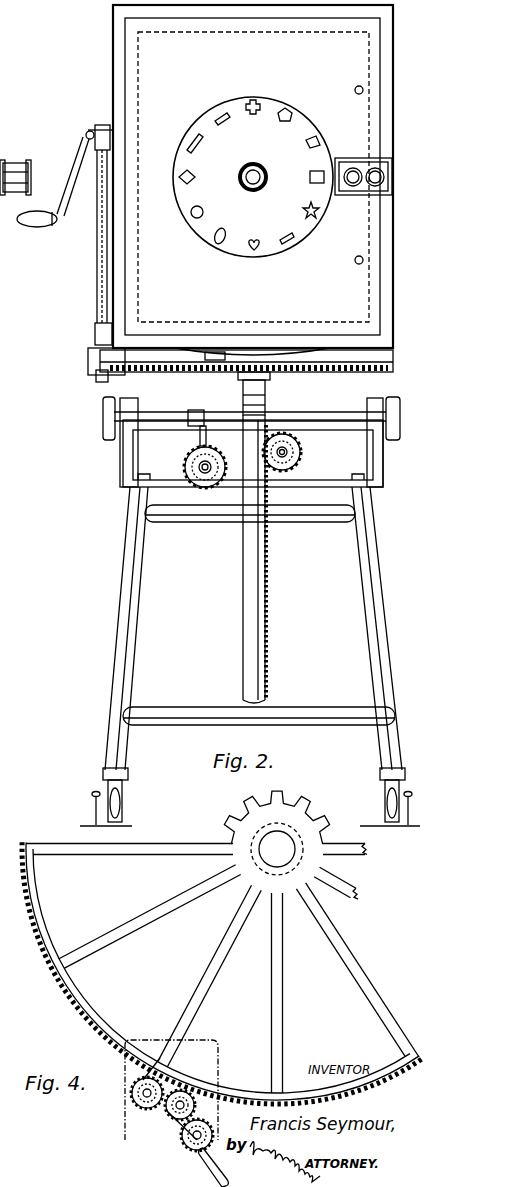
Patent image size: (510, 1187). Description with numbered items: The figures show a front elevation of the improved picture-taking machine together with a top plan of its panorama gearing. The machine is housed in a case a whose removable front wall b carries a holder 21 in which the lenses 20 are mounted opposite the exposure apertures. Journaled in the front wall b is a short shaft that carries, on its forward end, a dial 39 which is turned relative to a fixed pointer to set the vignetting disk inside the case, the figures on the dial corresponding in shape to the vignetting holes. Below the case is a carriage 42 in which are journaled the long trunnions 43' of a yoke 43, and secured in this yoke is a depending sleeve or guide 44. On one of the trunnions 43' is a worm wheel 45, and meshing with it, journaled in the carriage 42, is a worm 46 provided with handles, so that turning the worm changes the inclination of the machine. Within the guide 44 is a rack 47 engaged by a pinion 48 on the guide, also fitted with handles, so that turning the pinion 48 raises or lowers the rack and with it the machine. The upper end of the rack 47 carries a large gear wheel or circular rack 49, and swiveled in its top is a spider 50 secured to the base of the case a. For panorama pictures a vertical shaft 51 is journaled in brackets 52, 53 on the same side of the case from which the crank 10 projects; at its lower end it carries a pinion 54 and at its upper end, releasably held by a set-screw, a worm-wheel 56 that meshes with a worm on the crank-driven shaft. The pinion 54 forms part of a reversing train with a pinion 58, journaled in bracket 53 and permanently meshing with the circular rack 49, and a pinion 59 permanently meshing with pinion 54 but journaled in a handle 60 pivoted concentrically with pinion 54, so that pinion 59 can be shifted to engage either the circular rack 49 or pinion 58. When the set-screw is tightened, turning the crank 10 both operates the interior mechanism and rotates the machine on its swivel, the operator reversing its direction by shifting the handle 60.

In FIG. 2, the crank 10 is at (70, 198).
In FIG. 2, the lenses 20 is at (374, 185).
In FIG. 2, the holder 21 is at (342, 196).
In FIG. 2, the dial 39 is at (202, 233).
In FIG. 2, the carriage 42 is at (376, 574).
In FIG. 2, the yoke 43 is at (251, 442).
In FIG. 2, the trunnions 43' is at (253, 393).
In FIG. 2, the sleeve or guide 44 is at (247, 478).
In FIG. 2, the worm wheel 45 is at (200, 437).
In FIG. 2, the worm 46 is at (185, 466).
In FIG. 2, the rack 47 is at (263, 575).
In FIG. 2, the pinion 48 is at (300, 462).
In FIG. 2, the large gear wheel or circular rack 49 is at (303, 372).
In FIG. 4, the large gear wheel or circular rack 49 is at (221, 947).
In FIG. 2, the spider 50 is at (214, 358).
In FIG. 2, the vertical shaft 51 is at (100, 278).
In FIG. 4, the vertical shaft 51 is at (190, 1148).
In FIG. 2, the bracket 52 is at (98, 125).
In FIG. 2, the bracket 53 is at (90, 364).
In FIG. 4, the bracket 53 is at (160, 1115).
In FIG. 2, the pinion 54 is at (97, 382).
In FIG. 4, the pinion 54 is at (182, 1136).
In FIG. 2, the worm-wheel 56 is at (86, 134).
In FIG. 4, the pinion 58 is at (134, 1103).
In FIG. 4, the pinion 59 is at (168, 1118).
In FIG. 4, the handle 60 is at (213, 1165).
In FIG. 2, the case a is at (170, 352).
In FIG. 2, the front wall b is at (253, 177).